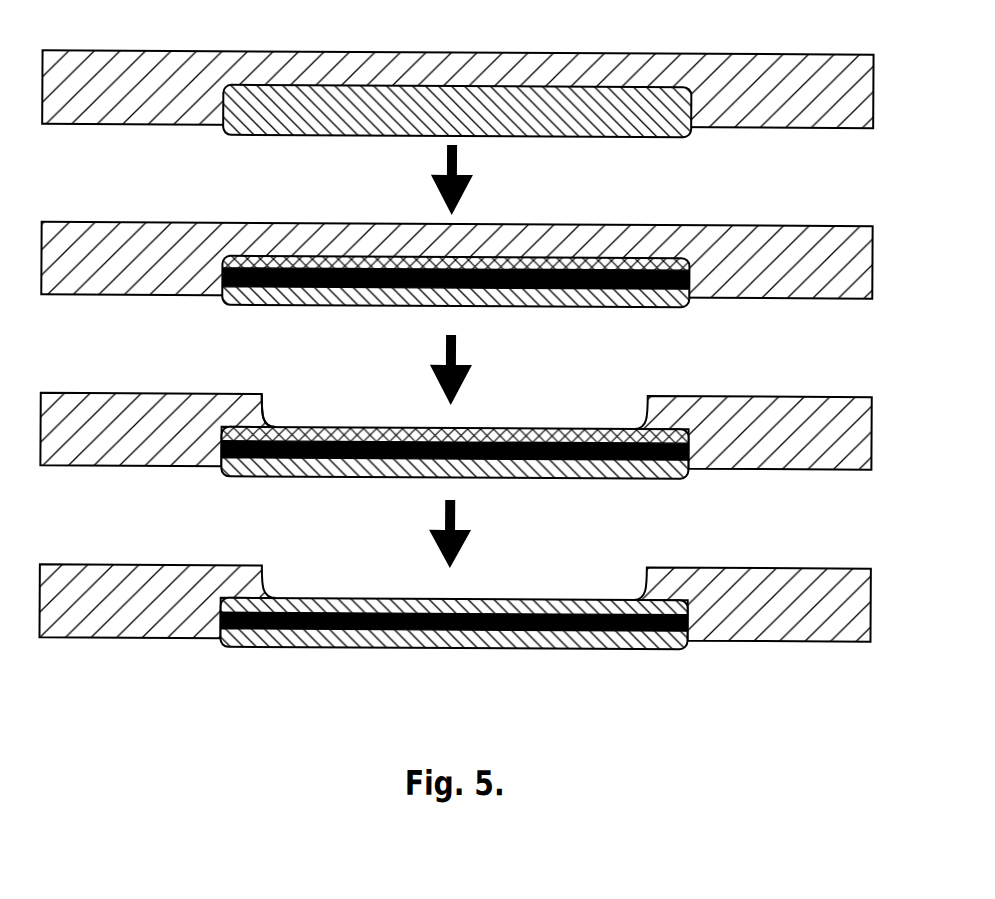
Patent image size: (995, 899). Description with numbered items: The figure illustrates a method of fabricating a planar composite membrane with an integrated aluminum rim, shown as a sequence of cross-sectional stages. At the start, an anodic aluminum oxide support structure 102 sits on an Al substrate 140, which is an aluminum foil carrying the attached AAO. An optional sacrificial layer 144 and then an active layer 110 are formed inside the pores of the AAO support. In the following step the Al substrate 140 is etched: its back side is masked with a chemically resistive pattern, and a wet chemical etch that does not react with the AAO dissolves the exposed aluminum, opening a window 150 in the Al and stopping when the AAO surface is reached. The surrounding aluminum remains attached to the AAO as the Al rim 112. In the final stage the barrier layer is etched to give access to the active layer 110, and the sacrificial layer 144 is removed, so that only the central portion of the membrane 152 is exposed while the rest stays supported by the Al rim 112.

The Al substrate 140 is at (152, 108).
The electronic component insert 102 is at (287, 123).
The sacrificial layer 144 is at (565, 262).
The active layer 110 is at (578, 288).
The window 150 is at (272, 410).
The Al rim 112 is at (133, 465).
The central portion of the membrane 152 is at (498, 600).